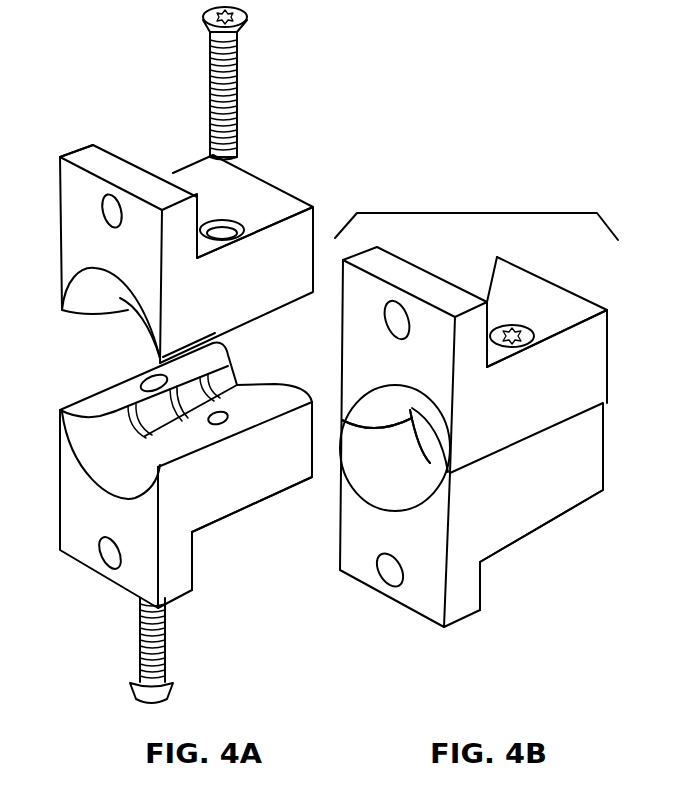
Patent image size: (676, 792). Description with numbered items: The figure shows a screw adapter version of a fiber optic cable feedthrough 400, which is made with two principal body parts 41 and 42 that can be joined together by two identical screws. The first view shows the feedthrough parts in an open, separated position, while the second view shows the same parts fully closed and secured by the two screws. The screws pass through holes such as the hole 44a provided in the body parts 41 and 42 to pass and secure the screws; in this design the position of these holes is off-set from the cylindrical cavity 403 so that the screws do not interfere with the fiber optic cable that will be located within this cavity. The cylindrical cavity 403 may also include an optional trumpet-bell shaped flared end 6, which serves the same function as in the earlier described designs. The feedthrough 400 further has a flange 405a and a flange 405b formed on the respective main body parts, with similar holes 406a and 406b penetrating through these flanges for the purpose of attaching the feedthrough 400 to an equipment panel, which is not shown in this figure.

In FIG. 4B, the fiber optic cable feedthrough 400 is at (485, 212).
In FIG. 4A, the principal body part 41 is at (227, 518).
In FIG. 4B, the principal body part 41 is at (528, 523).
In FIG. 4A, the principal body part 42 is at (260, 316).
In FIG. 4B, the principal body part 42 is at (468, 272).
In FIG. 4A, the hole 44a is at (226, 236).
In FIG. 4B, the cylindrical cavity 403 is at (427, 423).
In FIG. 4A, the flange 405a is at (197, 572).
In FIG. 4B, the flange 405a is at (482, 588).
In FIG. 4A, the flange 405b is at (108, 153).
In FIG. 4B, the flange 405b is at (490, 304).
In FIG. 4A, the hole 406a is at (112, 560).
In FIG. 4B, the hole 406a is at (387, 575).
In FIG. 4A, the hole 406b is at (107, 197).
In FIG. 4B, the hole 406b is at (383, 313).
In FIG. 4B, the trumpet-bell shaped flared end 6 is at (393, 485).